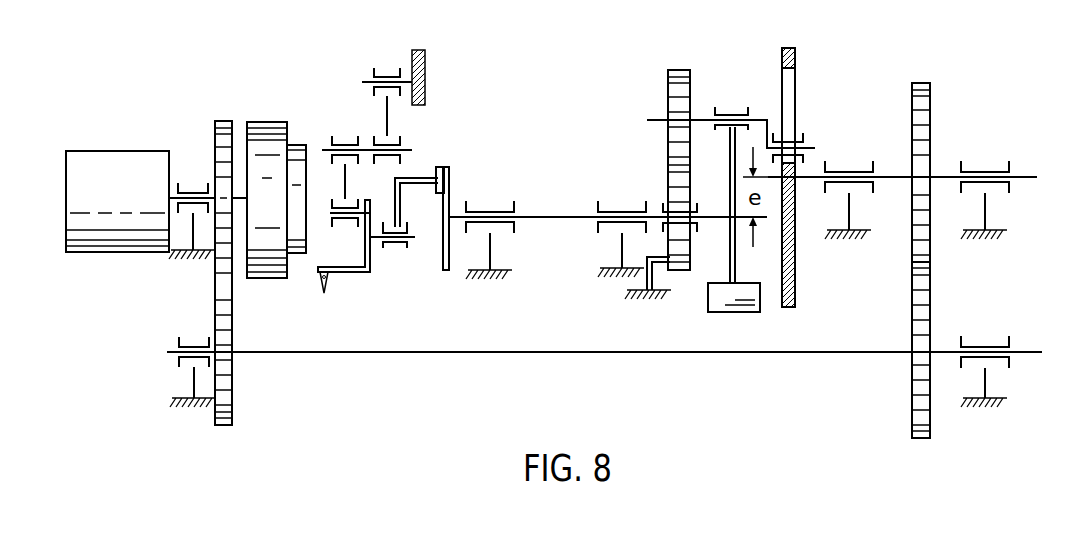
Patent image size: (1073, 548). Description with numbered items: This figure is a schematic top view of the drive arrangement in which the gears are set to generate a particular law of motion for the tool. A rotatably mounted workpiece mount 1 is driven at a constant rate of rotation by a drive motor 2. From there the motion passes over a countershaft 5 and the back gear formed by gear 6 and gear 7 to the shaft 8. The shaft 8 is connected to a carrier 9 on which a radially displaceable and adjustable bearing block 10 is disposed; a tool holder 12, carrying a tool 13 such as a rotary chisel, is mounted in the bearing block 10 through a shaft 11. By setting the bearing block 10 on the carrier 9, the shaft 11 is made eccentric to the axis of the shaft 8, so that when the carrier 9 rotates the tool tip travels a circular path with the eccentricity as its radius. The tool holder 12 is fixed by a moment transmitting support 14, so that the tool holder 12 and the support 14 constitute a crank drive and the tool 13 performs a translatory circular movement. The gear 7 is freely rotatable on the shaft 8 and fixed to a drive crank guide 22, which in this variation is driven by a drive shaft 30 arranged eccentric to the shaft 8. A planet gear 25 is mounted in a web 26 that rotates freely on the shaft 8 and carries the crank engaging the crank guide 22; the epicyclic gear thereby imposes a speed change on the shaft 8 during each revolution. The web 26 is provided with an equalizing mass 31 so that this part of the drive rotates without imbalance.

The workpiece mount 1 is at (260, 140).
The drive motor 2 is at (149, 168).
The countershaft 5 is at (516, 355).
The gear 6 is at (923, 405).
The gear 7 is at (925, 126).
The shaft 8 is at (548, 216).
The carrier 9 is at (448, 178).
The bearing block 10 is at (418, 178).
The shaft 11 is at (410, 238).
The tool holder 12 is at (372, 258).
The tool 13 is at (328, 280).
The moment transmitting support 14 is at (351, 126).
The drive crank guide 22 is at (797, 55).
The planet gear 25 is at (678, 70).
The web 26 is at (728, 262).
The drive shaft 30 is at (890, 175).
The equalizing mass 31 is at (752, 312).